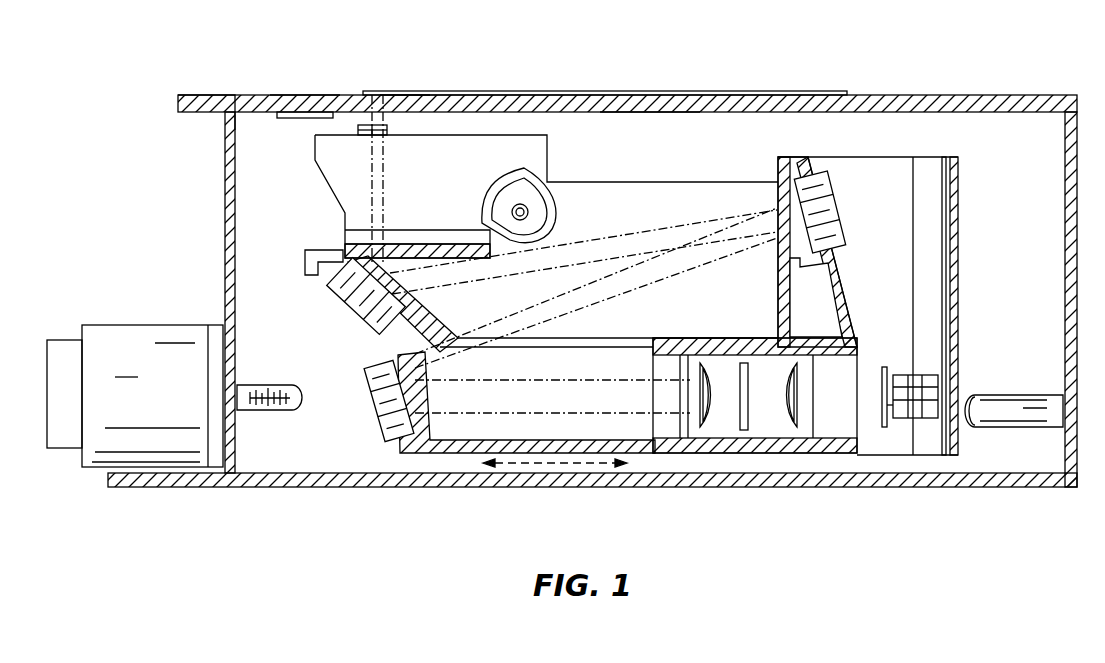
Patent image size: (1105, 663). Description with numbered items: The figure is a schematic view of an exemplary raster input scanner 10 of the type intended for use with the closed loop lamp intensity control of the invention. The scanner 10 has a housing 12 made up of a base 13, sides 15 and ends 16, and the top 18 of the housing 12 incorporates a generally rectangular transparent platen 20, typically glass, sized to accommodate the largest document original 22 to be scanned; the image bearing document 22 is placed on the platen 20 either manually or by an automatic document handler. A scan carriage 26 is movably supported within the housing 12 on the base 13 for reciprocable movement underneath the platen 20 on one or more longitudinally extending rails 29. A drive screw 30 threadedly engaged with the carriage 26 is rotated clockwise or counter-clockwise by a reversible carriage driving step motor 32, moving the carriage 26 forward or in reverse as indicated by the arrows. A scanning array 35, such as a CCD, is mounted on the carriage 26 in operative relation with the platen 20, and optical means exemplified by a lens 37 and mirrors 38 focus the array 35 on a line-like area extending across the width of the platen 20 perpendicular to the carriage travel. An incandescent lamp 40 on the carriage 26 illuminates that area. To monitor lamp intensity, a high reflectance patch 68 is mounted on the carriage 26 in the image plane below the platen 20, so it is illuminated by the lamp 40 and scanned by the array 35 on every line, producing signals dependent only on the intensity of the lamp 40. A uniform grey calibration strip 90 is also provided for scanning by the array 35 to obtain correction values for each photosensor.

The raster input scanner 10 is at (398, 50).
The housing 12 is at (180, 124).
The base 13 is at (365, 487).
The sides 15 is at (1030, 146).
The ends 16 is at (224, 226).
The top 18 is at (298, 93).
The transparent platen 20 is at (647, 116).
The document original 22 is at (779, 92).
The scan carriage 26 is at (712, 146).
The rails 29 is at (1025, 403).
The drive screw 30 is at (283, 388).
The carriage driving step motor 32 is at (178, 324).
The scanning array 35 is at (889, 453).
The lens 37 is at (772, 407).
The mirrors 38 is at (394, 322).
The incandescent lamp 40 is at (548, 186).
The reflective patch 68 is at (386, 124).
The calibration strip 90 is at (284, 119).